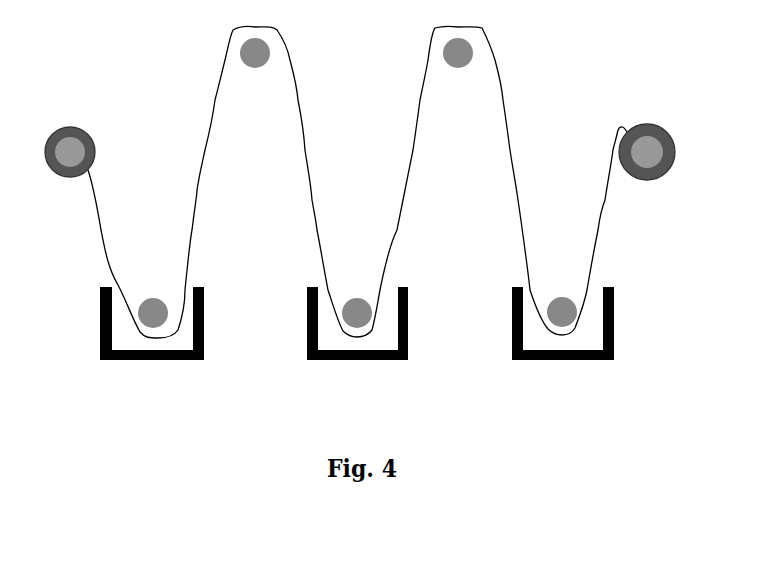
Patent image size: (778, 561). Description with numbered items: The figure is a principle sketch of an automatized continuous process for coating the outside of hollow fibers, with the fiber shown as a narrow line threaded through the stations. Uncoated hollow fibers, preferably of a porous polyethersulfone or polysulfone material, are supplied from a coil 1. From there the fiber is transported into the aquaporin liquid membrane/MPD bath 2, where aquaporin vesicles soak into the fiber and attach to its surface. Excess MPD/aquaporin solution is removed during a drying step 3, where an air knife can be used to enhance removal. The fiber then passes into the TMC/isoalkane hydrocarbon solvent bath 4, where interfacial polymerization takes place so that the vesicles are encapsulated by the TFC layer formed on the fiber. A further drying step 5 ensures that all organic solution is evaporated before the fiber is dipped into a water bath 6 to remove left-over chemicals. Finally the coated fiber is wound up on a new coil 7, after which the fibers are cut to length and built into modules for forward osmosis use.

The coil of uncoated hollow fibers 1 is at (70, 135).
The aquaporin liquid membrane/MPD bath 2 is at (152, 347).
The drying step 3 is at (255, 92).
The TMC/isoalkane hydrocarbon solvent bath 4 is at (357, 347).
The drying step 5 is at (458, 92).
The water bath 6 is at (563, 347).
The new coil 7 is at (647, 135).